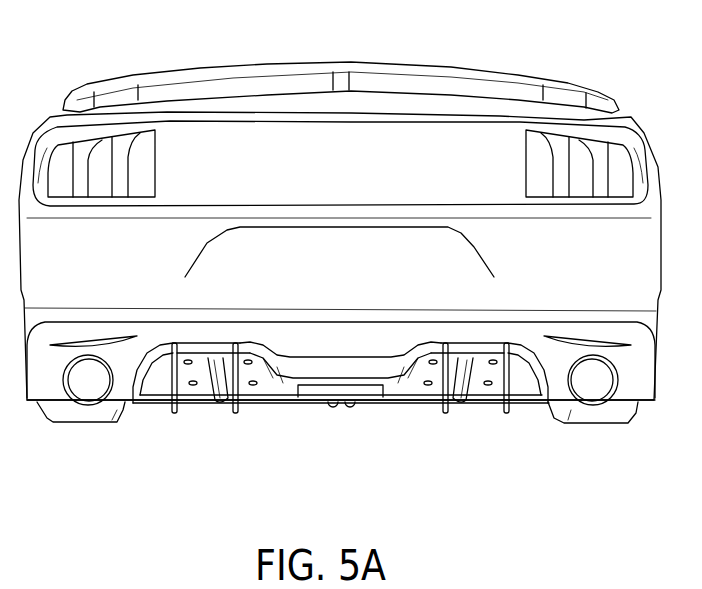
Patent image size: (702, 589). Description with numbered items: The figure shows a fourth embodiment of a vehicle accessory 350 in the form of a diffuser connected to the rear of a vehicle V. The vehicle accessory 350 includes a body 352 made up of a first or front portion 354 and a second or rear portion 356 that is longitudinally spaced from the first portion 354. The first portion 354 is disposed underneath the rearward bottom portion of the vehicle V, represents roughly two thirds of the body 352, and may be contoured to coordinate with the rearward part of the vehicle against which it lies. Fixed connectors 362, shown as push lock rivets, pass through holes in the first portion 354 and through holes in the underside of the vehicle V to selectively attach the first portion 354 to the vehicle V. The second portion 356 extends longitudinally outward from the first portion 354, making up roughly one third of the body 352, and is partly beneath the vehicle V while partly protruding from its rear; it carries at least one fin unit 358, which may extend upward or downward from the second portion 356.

The vehicle V is at (451, 97).
The vehicle accessory 350 is at (122, 403).
The body 352 is at (533, 390).
The first portion 354 is at (390, 387).
The second portion 356 is at (213, 378).
The fin unit 358 is at (175, 395).
The fixed connectors 362 is at (250, 363).